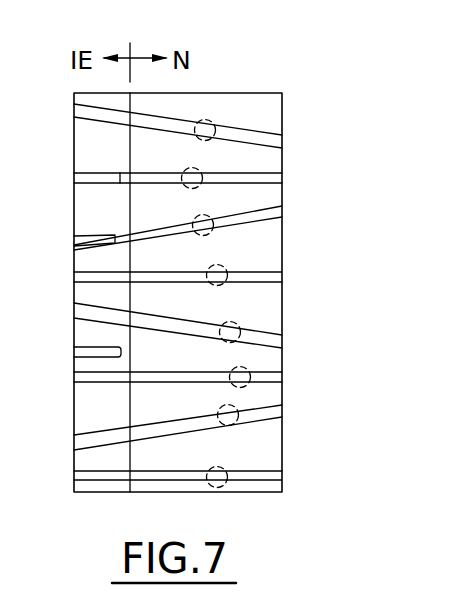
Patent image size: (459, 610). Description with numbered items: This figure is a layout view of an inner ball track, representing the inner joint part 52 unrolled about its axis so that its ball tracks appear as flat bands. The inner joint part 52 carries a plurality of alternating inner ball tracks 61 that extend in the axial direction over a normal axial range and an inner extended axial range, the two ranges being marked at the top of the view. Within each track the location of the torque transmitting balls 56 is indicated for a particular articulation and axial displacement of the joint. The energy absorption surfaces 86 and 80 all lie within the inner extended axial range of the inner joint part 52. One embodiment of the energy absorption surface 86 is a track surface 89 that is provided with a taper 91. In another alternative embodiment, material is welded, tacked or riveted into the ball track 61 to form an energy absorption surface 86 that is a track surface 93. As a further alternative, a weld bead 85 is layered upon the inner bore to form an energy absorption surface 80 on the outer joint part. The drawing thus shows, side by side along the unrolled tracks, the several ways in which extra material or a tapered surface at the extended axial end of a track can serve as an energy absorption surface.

The inner joint part 52 is at (236, 66).
The torque transmitting balls 56 is at (214, 121).
The inner ball tracks 61 is at (278, 143).
The energy absorption surface 80 is at (60, 353).
The weld bead 85 is at (88, 347).
The energy absorption surface 86 is at (58, 174).
The track surface 89 is at (103, 173).
The taper 91 is at (95, 183).
The track surface 93 is at (97, 248).